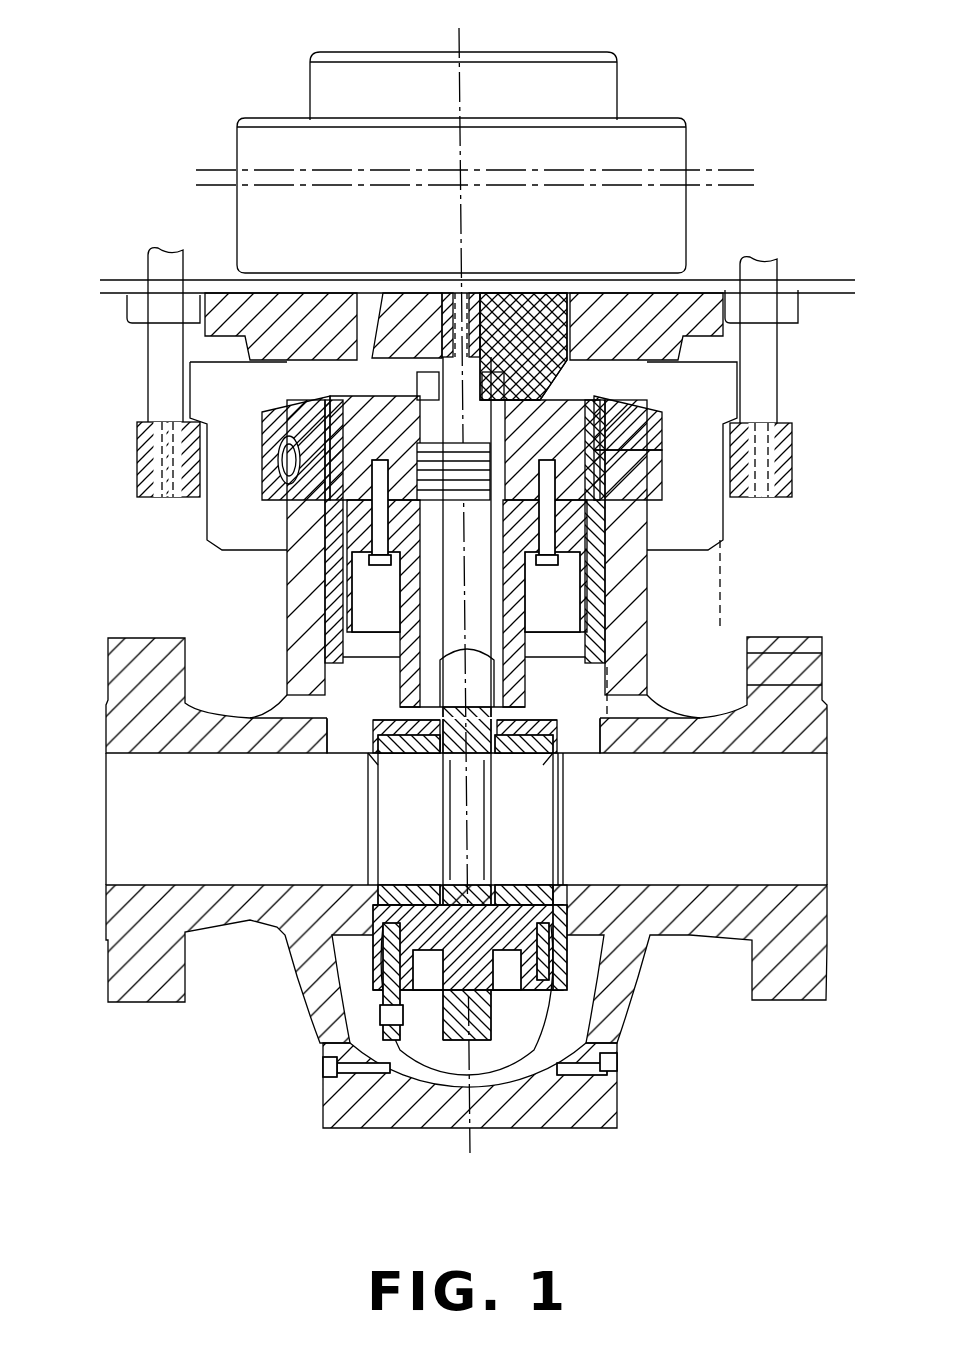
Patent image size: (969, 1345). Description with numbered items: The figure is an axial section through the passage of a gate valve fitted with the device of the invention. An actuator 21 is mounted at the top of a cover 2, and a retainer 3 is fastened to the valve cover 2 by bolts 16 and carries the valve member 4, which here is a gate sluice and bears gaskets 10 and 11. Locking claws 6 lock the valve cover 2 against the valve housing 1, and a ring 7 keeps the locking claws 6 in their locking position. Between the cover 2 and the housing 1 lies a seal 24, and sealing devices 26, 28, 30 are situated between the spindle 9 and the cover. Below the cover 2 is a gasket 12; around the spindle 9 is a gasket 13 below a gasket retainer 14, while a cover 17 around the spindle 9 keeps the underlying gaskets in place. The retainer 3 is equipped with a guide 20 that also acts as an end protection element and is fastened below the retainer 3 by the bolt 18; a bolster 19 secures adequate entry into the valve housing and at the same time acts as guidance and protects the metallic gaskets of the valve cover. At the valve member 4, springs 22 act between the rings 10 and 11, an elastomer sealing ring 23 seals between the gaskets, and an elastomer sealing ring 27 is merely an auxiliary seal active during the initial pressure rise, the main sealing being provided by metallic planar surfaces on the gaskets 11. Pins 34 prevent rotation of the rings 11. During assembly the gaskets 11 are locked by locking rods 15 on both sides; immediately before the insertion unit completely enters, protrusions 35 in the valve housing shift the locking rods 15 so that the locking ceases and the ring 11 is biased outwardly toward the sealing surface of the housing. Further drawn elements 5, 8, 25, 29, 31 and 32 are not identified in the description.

The valve housing 1 is at (135, 934).
The valve cover 2 is at (652, 432).
The retainer 3 is at (400, 600).
The valve member 4 is at (442, 890).
The flange 5 is at (300, 305).
The locking claws 6 is at (230, 470).
The ring 7 is at (140, 440).
The mounting plate 8 is at (790, 310).
The spindle 9 is at (475, 625).
The gasket 10 is at (400, 722).
The gasket 11 is at (370, 755).
The gasket 12 is at (320, 545).
The gasket 13 is at (275, 425).
The gasket retainer 14 is at (332, 420).
The locking rods 15 is at (385, 945).
The bolts 16 is at (590, 560).
The cover 17 is at (505, 395).
The bolt 18 is at (560, 955).
The bolster 19 is at (595, 607).
The guide 20 is at (362, 990).
The actuator 21 is at (258, 128).
The springs 22 is at (572, 890).
The elastomer sealing ring 23 is at (545, 765).
The seal 24 is at (600, 490).
The cap 25 is at (597, 402).
The sealing device 26 is at (472, 450).
The elastomer sealing ring 27 is at (562, 740).
The sealing device 28 is at (560, 420).
The spring 29 is at (330, 520).
The sealing device 30 is at (600, 457).
The screw 31 is at (332, 500).
The pin 32 is at (525, 588).
The pins 34 is at (565, 920).
The protrusions 35 is at (398, 1022).